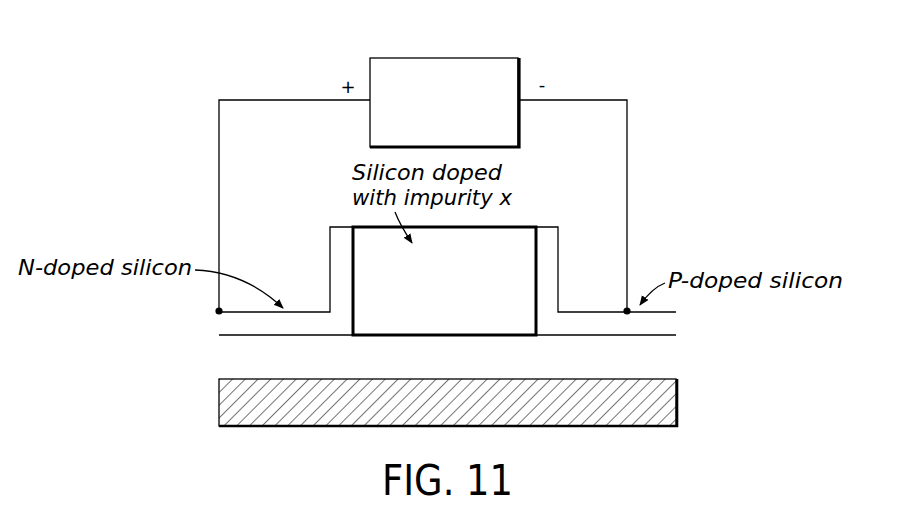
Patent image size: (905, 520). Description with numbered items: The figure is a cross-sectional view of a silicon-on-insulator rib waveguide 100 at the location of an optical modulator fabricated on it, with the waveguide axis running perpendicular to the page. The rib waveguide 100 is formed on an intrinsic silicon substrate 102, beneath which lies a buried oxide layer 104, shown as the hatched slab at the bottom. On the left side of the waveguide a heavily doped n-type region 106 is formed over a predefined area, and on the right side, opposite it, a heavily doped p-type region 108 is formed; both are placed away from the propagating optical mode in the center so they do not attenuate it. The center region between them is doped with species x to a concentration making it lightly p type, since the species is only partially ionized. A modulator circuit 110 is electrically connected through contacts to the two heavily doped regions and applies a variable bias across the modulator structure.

The silicon-on-insulator rib waveguide 100 is at (448, 249).
The intrinsic silicon substrate 102 is at (273, 369).
The buried oxide layer 104 is at (218, 408).
The heavily doped n-type region 106 is at (338, 258).
The heavily doped p-type region 108 is at (546, 257).
The modulator circuit 110 is at (444, 57).